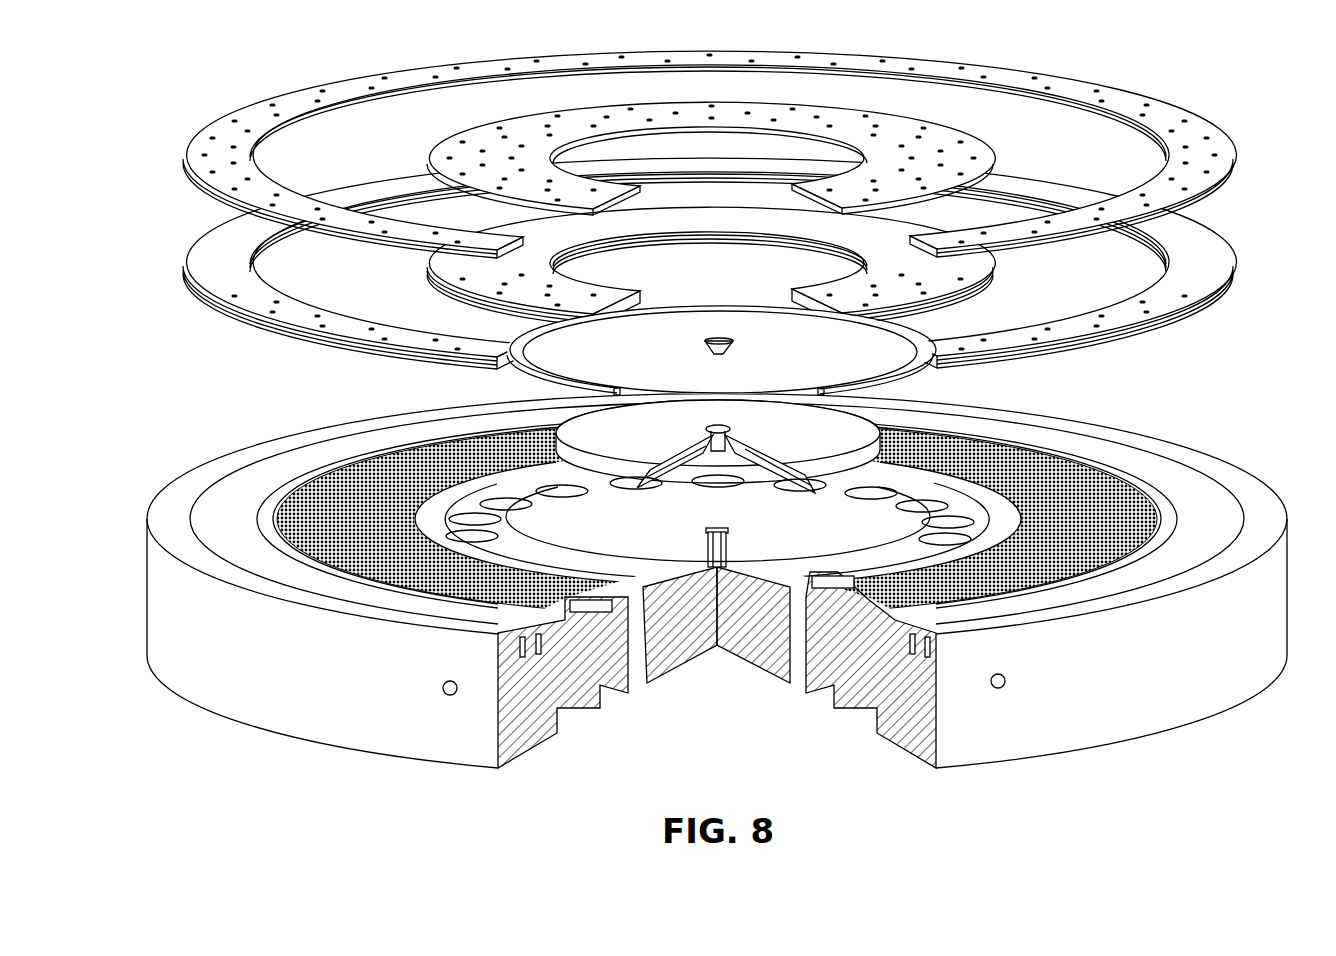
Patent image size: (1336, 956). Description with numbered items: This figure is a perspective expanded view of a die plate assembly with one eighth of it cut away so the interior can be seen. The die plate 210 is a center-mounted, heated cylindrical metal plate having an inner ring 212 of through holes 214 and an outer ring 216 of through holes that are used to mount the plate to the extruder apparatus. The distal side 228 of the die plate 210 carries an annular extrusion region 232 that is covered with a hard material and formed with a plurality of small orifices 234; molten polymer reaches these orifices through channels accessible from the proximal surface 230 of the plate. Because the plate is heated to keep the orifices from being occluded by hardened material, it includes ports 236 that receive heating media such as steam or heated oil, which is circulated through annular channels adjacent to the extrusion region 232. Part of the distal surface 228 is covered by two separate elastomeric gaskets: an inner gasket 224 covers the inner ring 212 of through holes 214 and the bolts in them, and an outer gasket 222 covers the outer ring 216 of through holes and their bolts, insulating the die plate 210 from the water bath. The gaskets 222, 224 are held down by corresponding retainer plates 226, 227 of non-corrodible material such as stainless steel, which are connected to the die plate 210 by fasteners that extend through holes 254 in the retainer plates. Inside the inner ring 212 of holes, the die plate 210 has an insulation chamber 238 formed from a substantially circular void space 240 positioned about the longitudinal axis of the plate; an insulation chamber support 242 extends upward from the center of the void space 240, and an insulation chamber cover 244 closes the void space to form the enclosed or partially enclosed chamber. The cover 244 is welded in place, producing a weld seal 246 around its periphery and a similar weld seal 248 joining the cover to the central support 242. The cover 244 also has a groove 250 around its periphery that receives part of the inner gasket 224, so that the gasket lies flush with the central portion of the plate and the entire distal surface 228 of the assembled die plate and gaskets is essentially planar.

The die plate 210 is at (174, 706).
The inner ring of through holes 212 is at (887, 505).
The through holes 214 is at (340, 460).
The outer ring of through holes 216 is at (1213, 490).
The outer gasket 222 is at (1210, 286).
The inner gasket 224 is at (980, 296).
The retainer plate 226 is at (972, 148).
The retainer plate 227 is at (744, 147).
The distal side 228 is at (287, 432).
The proximal surface 230 is at (283, 737).
The annular extrusion region 232 is at (1156, 536).
The extrusion orifices 234 is at (1098, 545).
The ports 236 is at (998, 688).
The insulation chamber 238 is at (675, 567).
The void space 240 is at (755, 588).
The insulation chamber support 242 is at (706, 546).
The insulation chamber cover 244 is at (903, 448).
The weld seal 246 is at (921, 390).
The weld seal 248 is at (720, 338).
The groove 250 is at (1062, 447).
The holes 254 is at (1165, 113).